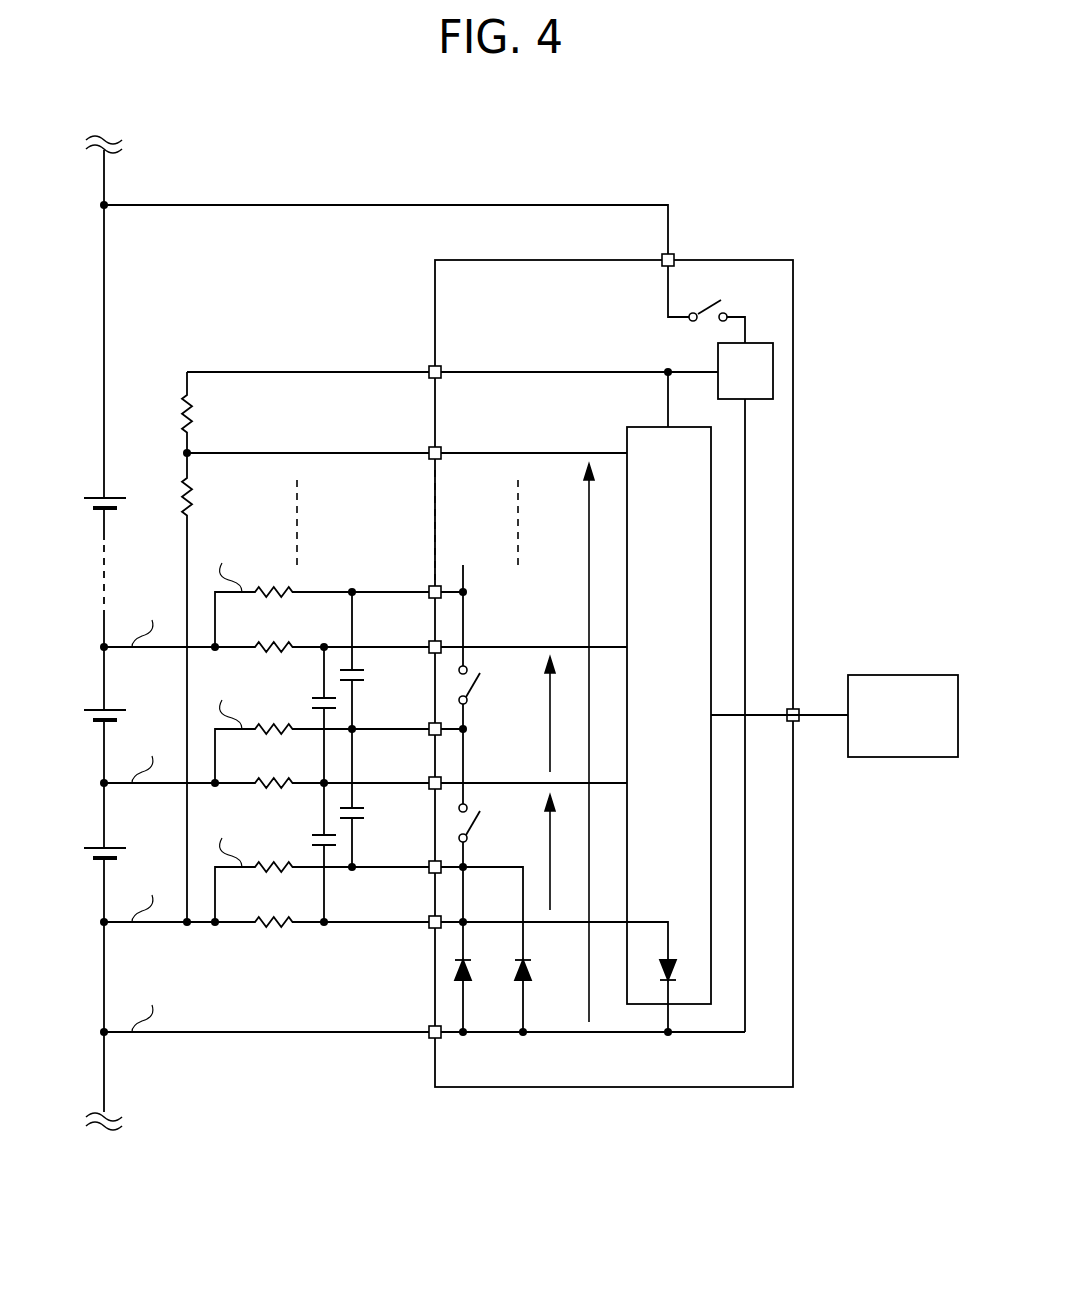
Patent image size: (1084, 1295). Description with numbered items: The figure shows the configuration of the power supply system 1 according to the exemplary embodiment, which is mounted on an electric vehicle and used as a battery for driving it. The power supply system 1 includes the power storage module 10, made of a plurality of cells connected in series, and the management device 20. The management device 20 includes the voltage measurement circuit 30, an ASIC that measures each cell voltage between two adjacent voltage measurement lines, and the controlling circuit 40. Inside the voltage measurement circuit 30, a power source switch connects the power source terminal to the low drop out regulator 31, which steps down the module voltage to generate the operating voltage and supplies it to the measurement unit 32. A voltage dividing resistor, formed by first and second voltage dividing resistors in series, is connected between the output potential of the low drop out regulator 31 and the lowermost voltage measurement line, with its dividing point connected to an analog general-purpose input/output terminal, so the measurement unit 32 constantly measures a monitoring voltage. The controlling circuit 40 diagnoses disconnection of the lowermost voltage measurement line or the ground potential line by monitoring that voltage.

The power supply system 1 is at (510, 1166).
The power storage module 10 is at (67, 442).
The management device 20 is at (581, 174).
The voltage measurement circuit 30 is at (762, 260).
The low drop out (LDO) 31 is at (755, 343).
The measurement unit 32 is at (679, 427).
The controlling circuit 40 is at (925, 675).